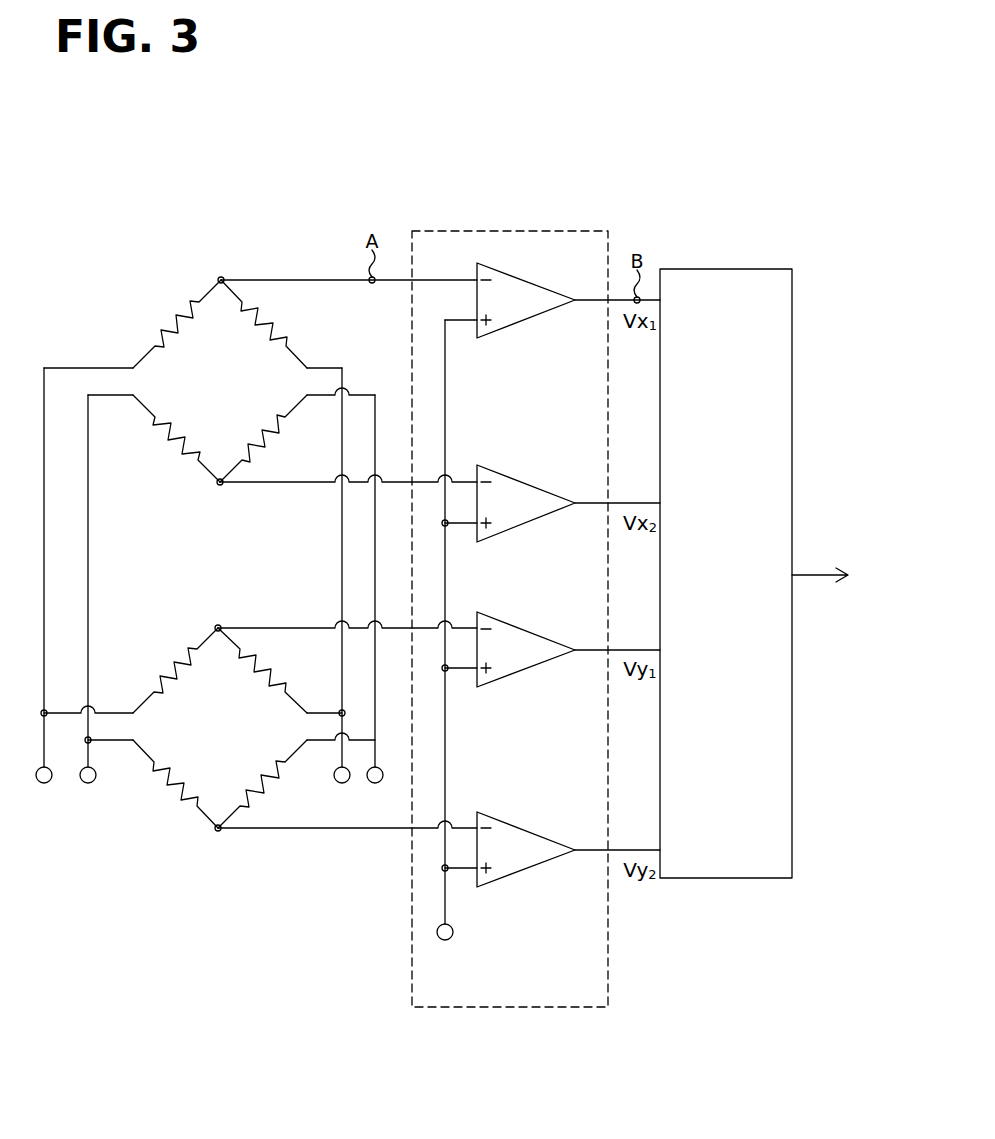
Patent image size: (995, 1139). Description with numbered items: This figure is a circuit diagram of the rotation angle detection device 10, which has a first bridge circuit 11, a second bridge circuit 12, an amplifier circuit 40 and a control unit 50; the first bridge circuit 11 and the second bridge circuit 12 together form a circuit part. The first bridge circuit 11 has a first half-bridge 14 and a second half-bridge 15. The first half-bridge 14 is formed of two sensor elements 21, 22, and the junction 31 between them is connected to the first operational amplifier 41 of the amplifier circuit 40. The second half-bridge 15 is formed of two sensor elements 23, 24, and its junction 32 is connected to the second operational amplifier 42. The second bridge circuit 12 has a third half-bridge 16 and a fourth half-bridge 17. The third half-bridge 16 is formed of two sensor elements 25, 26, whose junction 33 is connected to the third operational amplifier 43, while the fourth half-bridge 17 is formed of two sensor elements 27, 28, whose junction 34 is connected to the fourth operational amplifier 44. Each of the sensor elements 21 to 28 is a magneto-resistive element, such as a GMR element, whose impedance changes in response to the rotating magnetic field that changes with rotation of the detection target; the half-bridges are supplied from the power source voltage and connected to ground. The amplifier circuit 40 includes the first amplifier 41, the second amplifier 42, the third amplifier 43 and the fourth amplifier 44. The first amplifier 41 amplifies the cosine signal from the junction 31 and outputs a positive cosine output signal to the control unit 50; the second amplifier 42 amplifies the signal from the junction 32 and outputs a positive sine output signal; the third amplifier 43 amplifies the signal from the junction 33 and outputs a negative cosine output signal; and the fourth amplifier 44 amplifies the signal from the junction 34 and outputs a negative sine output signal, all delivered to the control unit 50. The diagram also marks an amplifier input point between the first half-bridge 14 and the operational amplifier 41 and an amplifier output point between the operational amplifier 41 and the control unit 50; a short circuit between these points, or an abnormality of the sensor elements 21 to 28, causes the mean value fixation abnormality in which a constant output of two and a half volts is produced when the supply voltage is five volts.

The rotation angle detection device 10 is at (175, 987).
The first bridge circuit 11 is at (257, 190).
The second bridge circuit 12 is at (180, 910).
The first half-bridge 14 is at (233, 290).
The second half-bridge 15 is at (297, 700).
The third half-bridge 16 is at (205, 473).
The fourth half-bridge 17 is at (203, 817).
The sensor element 21 is at (173, 315).
The sensor element 22 is at (272, 320).
The sensor element 23 is at (170, 662).
The sensor element 24 is at (268, 663).
The sensor element 25 is at (168, 435).
The sensor element 26 is at (270, 437).
The sensor element 27 is at (168, 780).
The sensor element 28 is at (270, 783).
The junction 31 is at (219, 276).
The junction 32 is at (216, 623).
The junction 33 is at (222, 487).
The junction 34 is at (220, 833).
The amplifier circuit 40 is at (570, 1007).
The first operational amplifier 41 is at (527, 280).
The second operational amplifier 42 is at (527, 629).
The third operational amplifier 43 is at (527, 482).
The fourth operational amplifier 44 is at (527, 828).
The control unit 50 is at (769, 878).